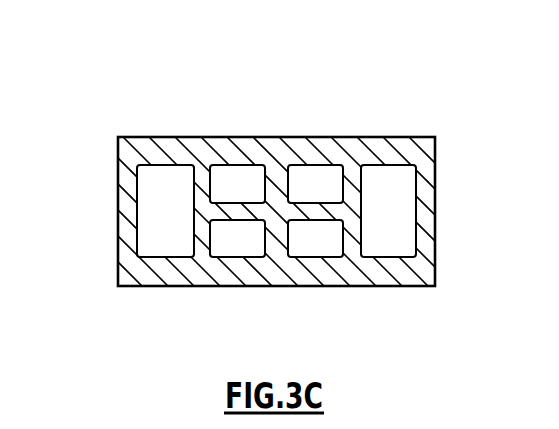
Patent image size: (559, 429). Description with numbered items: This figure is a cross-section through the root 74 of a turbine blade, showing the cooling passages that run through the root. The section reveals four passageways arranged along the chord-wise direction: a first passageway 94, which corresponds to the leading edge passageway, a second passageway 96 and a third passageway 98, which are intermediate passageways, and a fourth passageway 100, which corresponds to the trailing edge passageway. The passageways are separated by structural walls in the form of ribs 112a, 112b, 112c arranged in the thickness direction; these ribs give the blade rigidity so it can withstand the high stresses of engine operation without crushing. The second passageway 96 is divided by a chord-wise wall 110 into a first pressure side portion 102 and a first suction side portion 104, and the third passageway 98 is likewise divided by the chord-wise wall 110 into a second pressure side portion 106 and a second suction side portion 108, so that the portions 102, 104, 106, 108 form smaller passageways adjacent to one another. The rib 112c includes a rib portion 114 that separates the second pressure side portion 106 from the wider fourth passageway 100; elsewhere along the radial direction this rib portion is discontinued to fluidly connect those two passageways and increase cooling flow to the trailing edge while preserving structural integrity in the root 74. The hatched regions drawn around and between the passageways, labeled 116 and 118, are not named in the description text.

The root 74 is at (95, 242).
The first passageway 94 is at (165, 157).
The second passageway 96 is at (238, 157).
The third passageway 98 is at (318, 157).
The fourth passageway 100 is at (398, 157).
The first pressure side portion 102 is at (238, 245).
The first suction side portion 104 is at (242, 185).
The second pressure side portion 106 is at (316, 245).
The second suction side portion 108 is at (322, 185).
The chord-wise wall 110 is at (220, 209).
The rib 112a is at (200, 180).
The rib 112b is at (273, 195).
The rib 112c is at (352, 197).
The rib portion 114 is at (353, 248).
The bottom wall 116 is at (217, 270).
The top wall 118 is at (210, 141).